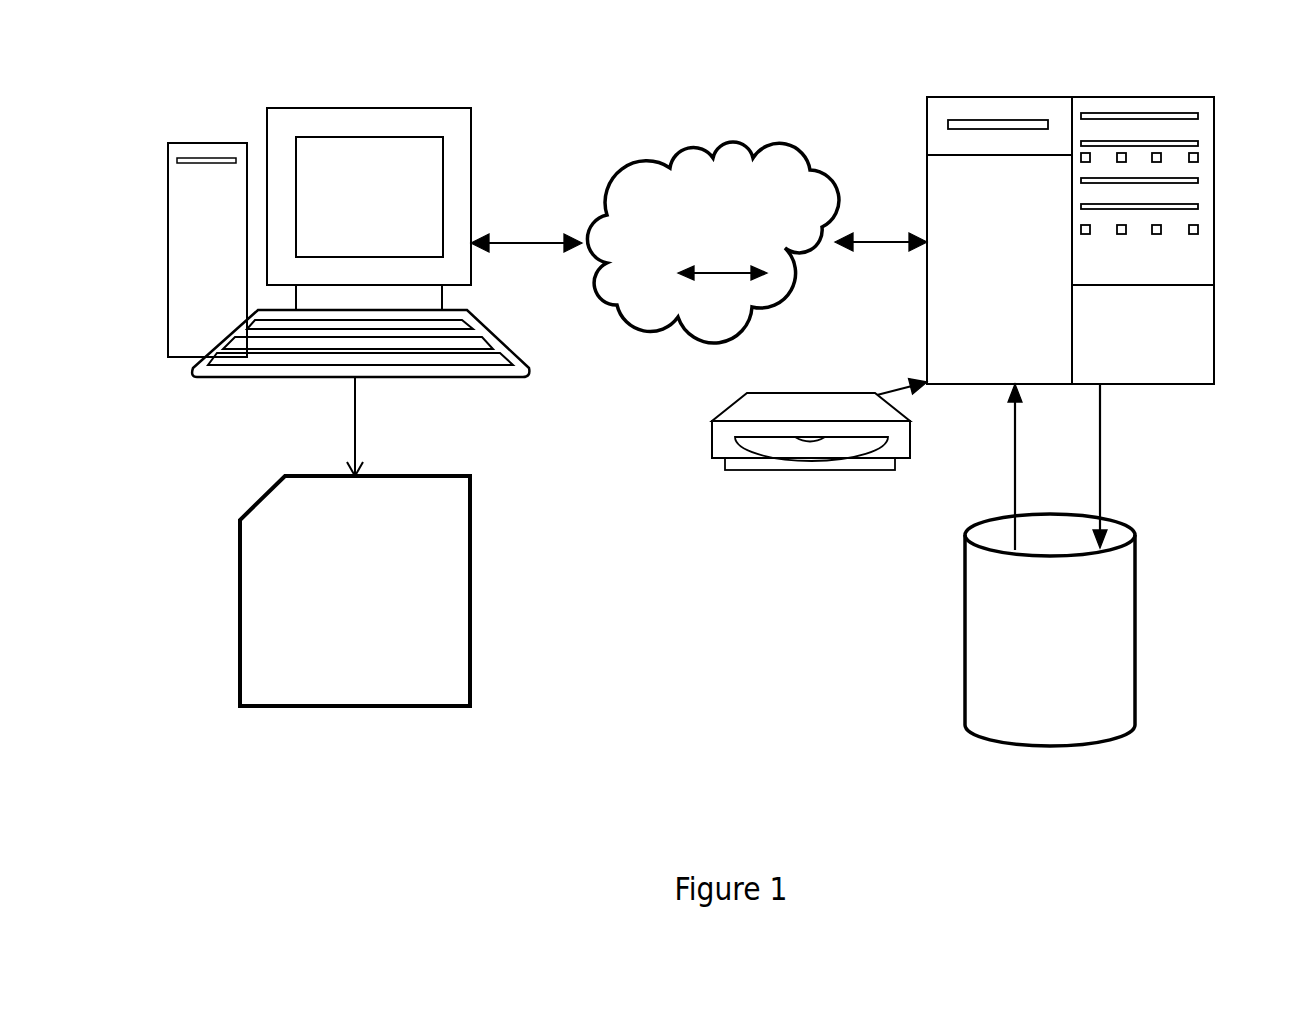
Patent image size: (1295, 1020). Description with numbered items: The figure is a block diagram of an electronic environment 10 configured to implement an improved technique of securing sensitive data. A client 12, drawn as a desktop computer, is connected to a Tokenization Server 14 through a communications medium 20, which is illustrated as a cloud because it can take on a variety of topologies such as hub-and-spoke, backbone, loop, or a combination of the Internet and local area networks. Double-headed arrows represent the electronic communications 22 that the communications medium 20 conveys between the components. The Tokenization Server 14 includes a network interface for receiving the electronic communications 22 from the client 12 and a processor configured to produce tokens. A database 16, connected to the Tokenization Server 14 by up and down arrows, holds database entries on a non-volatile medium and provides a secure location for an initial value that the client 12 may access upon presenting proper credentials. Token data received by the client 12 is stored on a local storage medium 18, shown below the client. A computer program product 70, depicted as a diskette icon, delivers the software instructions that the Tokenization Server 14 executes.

The electronic environment 10 is at (155, 113).
The client 12 is at (347, 108).
The Tokenization Server 14 is at (926, 171).
The database 16 is at (1135, 628).
The local storage medium 18 is at (470, 593).
The communications medium 20 is at (650, 80).
The electronic communications 22 is at (722, 253).
The computer program product 70 is at (783, 472).